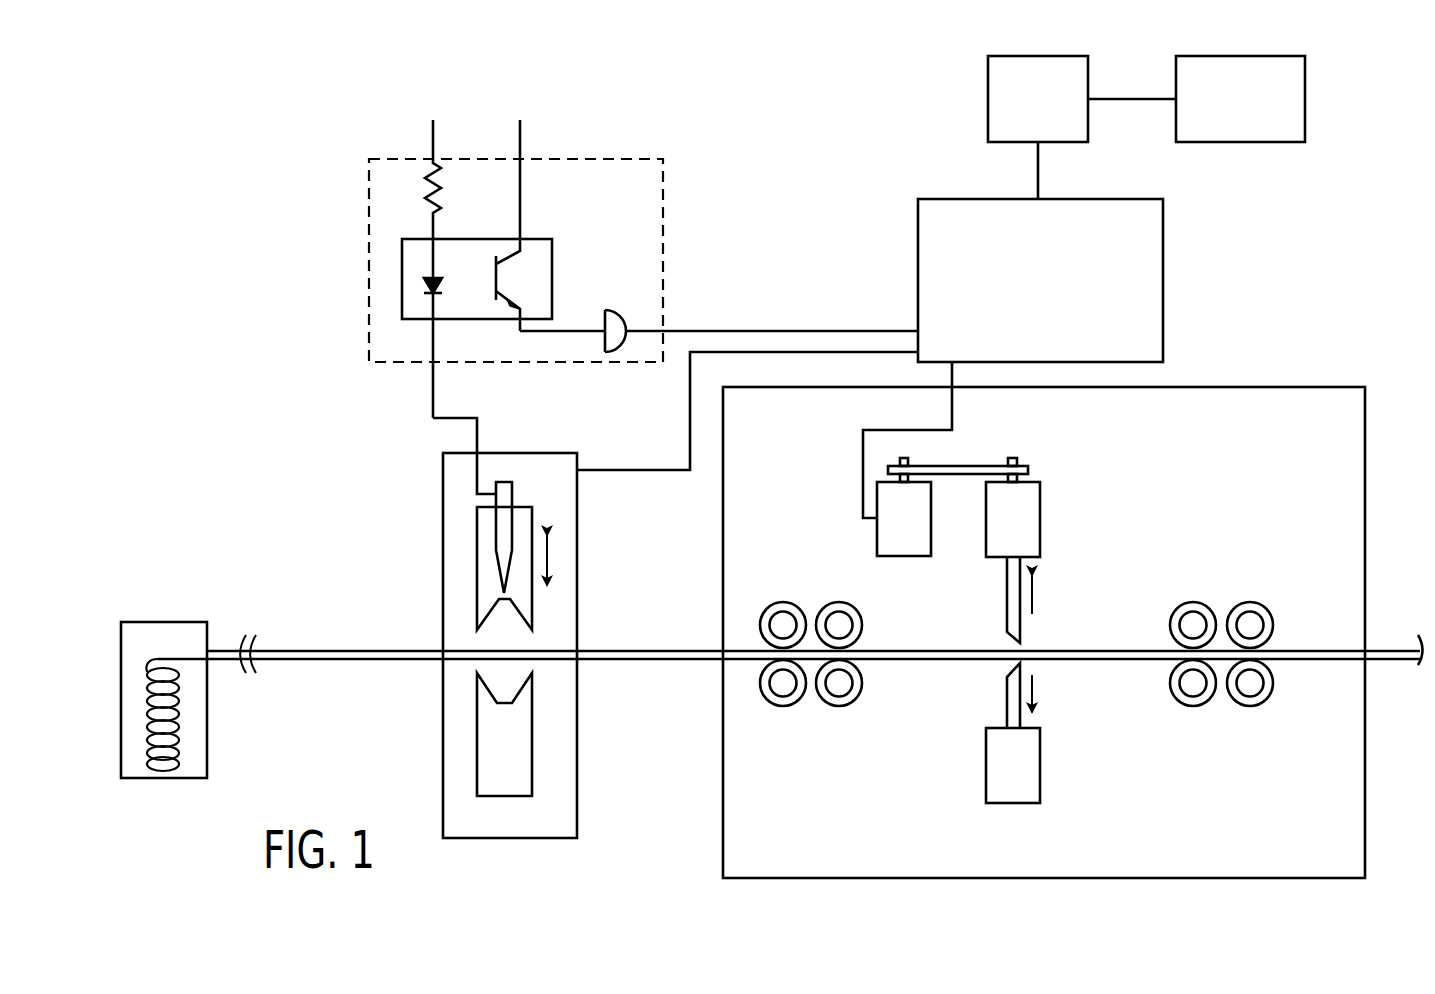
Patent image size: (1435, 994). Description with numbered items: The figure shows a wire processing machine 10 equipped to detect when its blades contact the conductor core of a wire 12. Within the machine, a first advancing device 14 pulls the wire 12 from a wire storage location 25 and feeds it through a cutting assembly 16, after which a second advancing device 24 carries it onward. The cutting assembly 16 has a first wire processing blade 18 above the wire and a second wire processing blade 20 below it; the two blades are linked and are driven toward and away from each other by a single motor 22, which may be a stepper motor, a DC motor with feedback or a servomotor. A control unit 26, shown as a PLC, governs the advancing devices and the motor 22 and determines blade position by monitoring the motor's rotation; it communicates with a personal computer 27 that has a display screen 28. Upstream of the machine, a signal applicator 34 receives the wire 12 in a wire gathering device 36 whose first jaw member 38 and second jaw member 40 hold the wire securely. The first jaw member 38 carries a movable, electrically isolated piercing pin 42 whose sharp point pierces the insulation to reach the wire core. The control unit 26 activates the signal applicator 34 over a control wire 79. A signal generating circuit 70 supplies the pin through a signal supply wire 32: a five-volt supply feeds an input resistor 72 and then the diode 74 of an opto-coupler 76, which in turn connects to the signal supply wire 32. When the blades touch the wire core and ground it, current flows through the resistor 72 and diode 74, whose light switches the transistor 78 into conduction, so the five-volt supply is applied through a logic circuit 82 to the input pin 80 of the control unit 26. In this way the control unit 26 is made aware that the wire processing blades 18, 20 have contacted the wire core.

The wire processing machine 10 is at (1232, 354).
The wire 12 is at (275, 648).
The first advancing device 14 is at (783, 602).
The cutting assembly 16 is at (1060, 605).
The first wire processing blade 18 is at (1007, 600).
The second wire processing blade 20 is at (1007, 700).
The motor 22 is at (877, 540).
The second advancing device 24 is at (1250, 602).
The wire storage location 25 is at (165, 622).
The control unit 26 is at (1163, 278).
The personal computer 27 is at (988, 97).
The display screen 28 is at (1305, 97).
The signal supply wire 32 is at (477, 432).
The signal applicator 34 is at (443, 470).
The wire gathering device 36 is at (550, 639).
The first jaw member 38 is at (485, 550).
The second jaw member 40 is at (487, 755).
The piercing pin 42 is at (500, 535).
The signal generating circuit 70 is at (597, 159).
The input resistor 72 is at (425, 192).
The diode 74 is at (424, 290).
The opto-coupler 76 is at (420, 239).
The transistor 78 is at (507, 262).
The control wire 79 is at (613, 470).
The input pin 80 is at (797, 331).
The logic circuit 82 is at (620, 312).